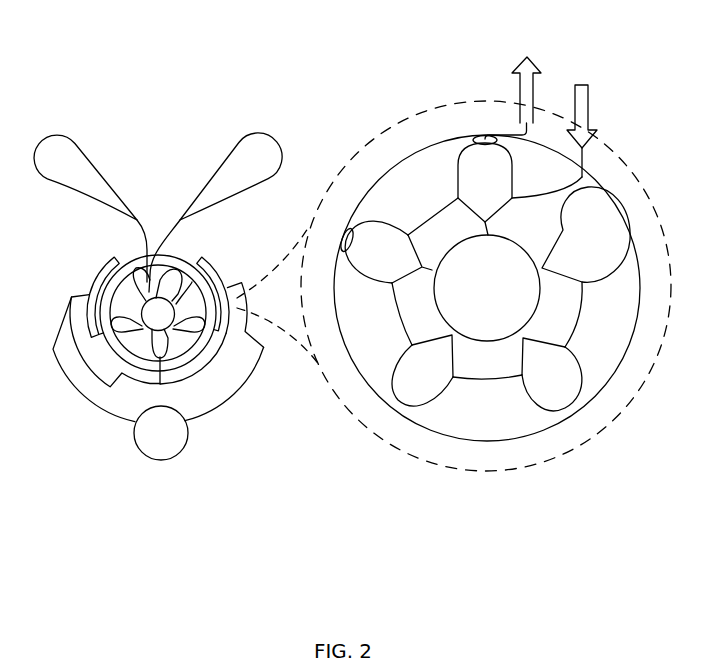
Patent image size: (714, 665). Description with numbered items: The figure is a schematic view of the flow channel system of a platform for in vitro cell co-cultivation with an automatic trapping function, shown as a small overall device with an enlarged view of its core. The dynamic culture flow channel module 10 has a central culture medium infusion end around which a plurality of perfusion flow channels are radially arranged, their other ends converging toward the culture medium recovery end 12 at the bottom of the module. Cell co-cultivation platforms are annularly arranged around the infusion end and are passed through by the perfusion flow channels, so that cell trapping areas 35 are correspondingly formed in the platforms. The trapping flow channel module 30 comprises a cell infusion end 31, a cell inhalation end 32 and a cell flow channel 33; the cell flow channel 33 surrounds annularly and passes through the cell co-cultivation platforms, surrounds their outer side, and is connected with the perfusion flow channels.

The dynamic culture flow channel module 10 is at (318, 478).
The culture medium recovery end 12 is at (162, 442).
The trapping flow channel module 30 is at (200, 10).
The cell infusion end 31 is at (617, 88).
The cell inhalation end 32 is at (527, 90).
The cell flow channel 33 is at (647, 138).
The cell trapping areas 35 is at (343, 240).